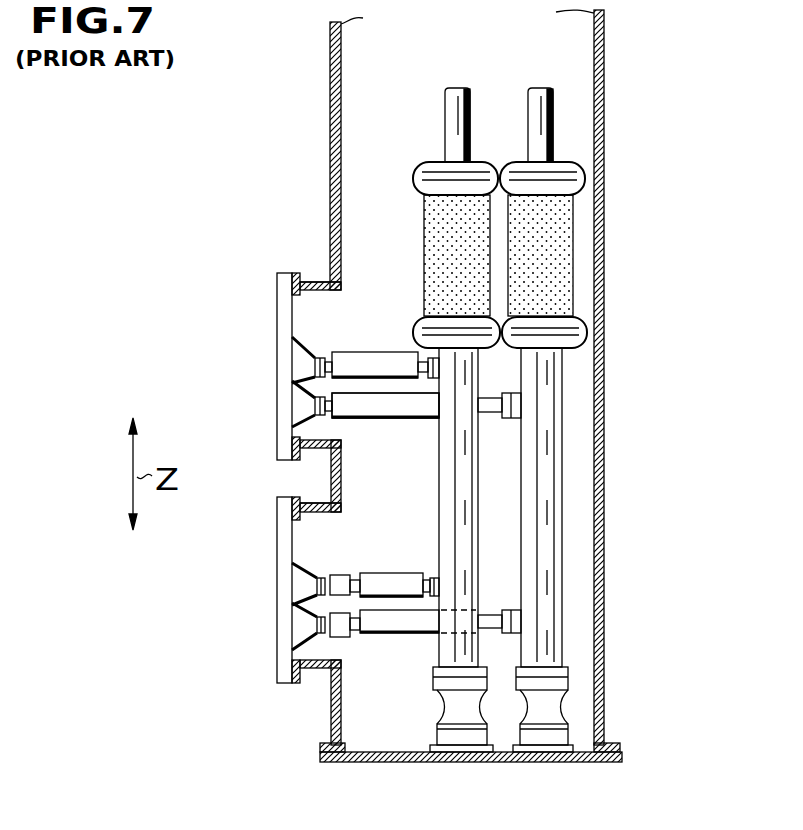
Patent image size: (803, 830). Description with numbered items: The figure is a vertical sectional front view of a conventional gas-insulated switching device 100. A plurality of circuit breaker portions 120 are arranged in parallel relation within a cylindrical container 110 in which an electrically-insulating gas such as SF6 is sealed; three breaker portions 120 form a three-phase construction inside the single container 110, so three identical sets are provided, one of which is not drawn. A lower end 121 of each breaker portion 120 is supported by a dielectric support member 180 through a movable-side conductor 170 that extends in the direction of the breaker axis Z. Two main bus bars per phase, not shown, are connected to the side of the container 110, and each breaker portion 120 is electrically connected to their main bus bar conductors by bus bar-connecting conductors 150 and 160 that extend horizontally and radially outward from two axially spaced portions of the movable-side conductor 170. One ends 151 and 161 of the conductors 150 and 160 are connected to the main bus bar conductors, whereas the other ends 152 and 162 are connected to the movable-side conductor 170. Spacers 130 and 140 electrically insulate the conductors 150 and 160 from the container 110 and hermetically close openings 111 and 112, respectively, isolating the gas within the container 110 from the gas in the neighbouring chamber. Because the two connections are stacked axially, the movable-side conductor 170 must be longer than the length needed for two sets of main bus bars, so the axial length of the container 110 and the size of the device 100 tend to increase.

The gas-insulated switching device 100 is at (622, 450).
The cylindrical container 110 is at (604, 122).
The opening 111 is at (304, 510).
The opening 112 is at (313, 296).
The circuit breaker portion 120 is at (437, 242).
The lower end 121 is at (583, 340).
The spacer 130 is at (285, 590).
The spacer 140 is at (283, 388).
The bus bar-connecting conductor 150 is at (387, 588).
The one end of bus bar-connecting conductor 151 is at (368, 582).
The other end of bus bar-connecting conductor 152 is at (488, 607).
The bus bar-connecting conductor 160 is at (372, 356).
The one end of bus bar-connecting conductor 161 is at (343, 412).
The other end of bus bar-connecting conductor 162 is at (412, 362).
The movable-side conductor 170 is at (462, 490).
The dielectric support member 180 is at (443, 710).